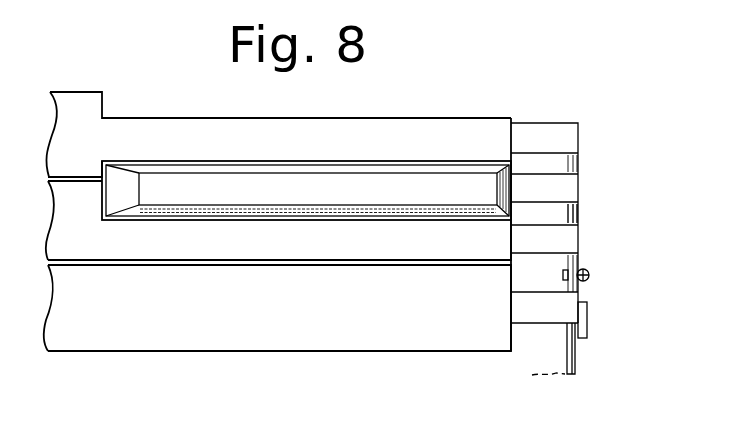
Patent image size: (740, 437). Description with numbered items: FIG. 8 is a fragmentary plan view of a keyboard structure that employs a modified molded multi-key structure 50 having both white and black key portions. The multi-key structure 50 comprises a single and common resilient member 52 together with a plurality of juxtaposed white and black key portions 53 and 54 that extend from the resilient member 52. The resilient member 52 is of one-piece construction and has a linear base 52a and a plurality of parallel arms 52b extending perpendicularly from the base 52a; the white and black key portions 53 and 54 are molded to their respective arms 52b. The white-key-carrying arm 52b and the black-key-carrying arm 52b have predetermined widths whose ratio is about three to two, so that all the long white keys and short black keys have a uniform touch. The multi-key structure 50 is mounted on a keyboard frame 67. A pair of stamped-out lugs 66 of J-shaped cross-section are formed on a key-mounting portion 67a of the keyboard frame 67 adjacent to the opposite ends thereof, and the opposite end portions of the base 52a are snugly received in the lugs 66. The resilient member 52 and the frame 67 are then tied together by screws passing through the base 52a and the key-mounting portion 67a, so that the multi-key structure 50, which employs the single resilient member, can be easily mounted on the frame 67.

The multi-key structure 50 is at (260, 356).
The white key portion 53 is at (352, 340).
The black key portion 54 is at (383, 182).
The resilient member 52 is at (580, 141).
The base 52a is at (578, 215).
The arm 52b is at (571, 190).
The lug 66 is at (588, 330).
The keyboard frame 67 is at (547, 360).
The key-mounting portion 67a is at (576, 365).